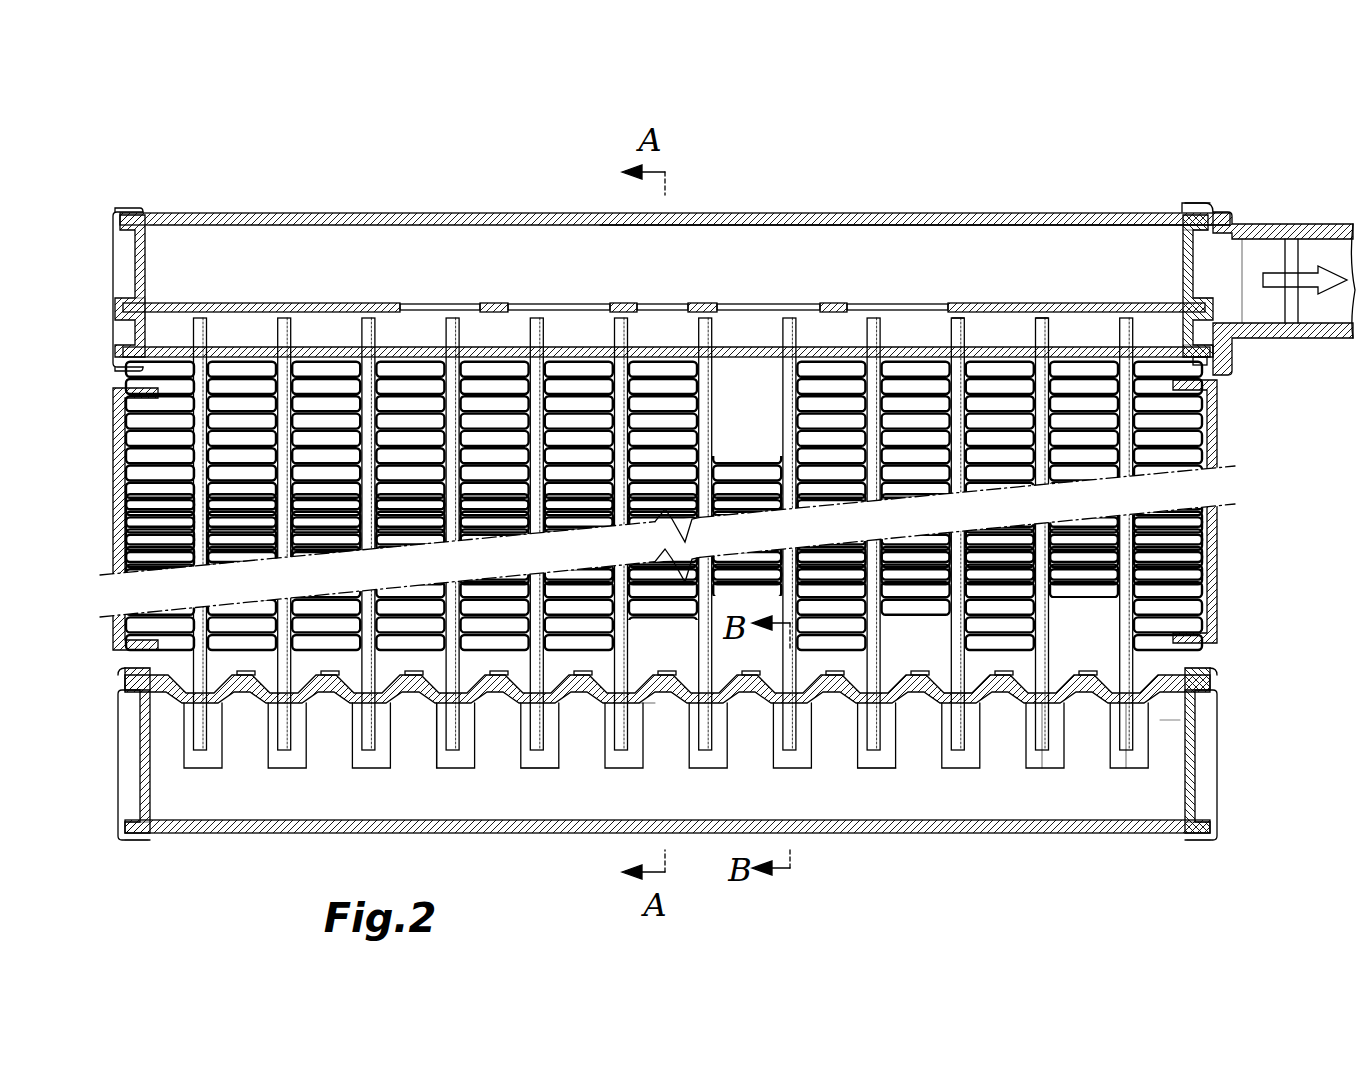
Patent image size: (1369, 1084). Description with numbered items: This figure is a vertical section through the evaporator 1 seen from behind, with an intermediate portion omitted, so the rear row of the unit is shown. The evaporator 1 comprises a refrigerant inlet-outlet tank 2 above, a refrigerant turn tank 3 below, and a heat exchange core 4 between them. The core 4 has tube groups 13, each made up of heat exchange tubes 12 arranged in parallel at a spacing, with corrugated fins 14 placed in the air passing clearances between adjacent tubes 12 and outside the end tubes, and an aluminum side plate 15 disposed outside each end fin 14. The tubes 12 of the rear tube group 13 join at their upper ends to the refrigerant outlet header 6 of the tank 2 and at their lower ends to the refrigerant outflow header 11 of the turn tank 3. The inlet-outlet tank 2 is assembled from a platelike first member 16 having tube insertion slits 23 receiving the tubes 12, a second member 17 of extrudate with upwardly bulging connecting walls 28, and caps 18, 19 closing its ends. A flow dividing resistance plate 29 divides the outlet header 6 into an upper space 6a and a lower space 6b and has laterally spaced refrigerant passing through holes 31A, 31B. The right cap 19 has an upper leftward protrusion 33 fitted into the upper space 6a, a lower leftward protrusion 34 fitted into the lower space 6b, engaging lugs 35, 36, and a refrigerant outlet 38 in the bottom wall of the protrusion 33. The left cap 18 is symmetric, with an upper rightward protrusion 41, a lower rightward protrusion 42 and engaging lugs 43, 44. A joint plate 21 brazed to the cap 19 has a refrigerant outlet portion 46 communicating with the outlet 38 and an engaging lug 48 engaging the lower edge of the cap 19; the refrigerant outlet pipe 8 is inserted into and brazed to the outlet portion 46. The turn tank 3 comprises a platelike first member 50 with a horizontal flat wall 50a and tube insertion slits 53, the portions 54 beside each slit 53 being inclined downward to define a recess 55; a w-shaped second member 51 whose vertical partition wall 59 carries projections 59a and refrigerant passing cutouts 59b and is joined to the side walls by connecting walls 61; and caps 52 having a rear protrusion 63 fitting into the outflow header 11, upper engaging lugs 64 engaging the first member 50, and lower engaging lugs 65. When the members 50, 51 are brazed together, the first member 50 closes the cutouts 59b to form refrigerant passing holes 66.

The evaporator 1 is at (1013, 163).
The refrigerant inlet-outlet tank 2 is at (760, 213).
The refrigerant turn tank 3 is at (270, 842).
The heat exchange core 4 is at (1215, 560).
The refrigerant outlet header 6 is at (385, 288).
The upper space 6a is at (225, 213).
The lower space 6b is at (330, 303).
The refrigerant outlet pipe 8 is at (1325, 338).
The refrigerant outflow header 11 is at (318, 808).
The heat exchange tubes 12 is at (795, 750).
The tube group 13 is at (1150, 720).
The corrugated fins 14 is at (1180, 515).
The side plate 15 is at (113, 470).
The first member 16 is at (745, 357).
The second member 17 is at (930, 213).
The left cap 18 is at (113, 230).
The right cap 19 is at (1185, 212).
The joint plate 21 is at (1228, 212).
The tube insertion holes 23 is at (1040, 322).
The connecting walls 28 is at (520, 213).
The flow dividing resistance plate 29 is at (290, 303).
The refrigerant passing through hole 31A is at (700, 303).
The refrigerant passing through hole 31B is at (490, 303).
The upper leftward protrusion 33 is at (1180, 230).
The lower leftward protrusion 34 is at (1200, 312).
The engaging lug 35 is at (1205, 203).
The engaging lug 36 is at (1193, 358).
The refrigerant outlet 38 is at (1183, 236).
The upper rightward protrusion 41 is at (145, 230).
The lower rightward protrusion 42 is at (140, 300).
The upper engaging lug 43 is at (130, 208).
The lower engaging lug 44 is at (115, 362).
The refrigerant outlet portion 46 is at (1270, 338).
The engaging lug 48 is at (1200, 366).
The first member 50 is at (1085, 675).
The horizontal flat wall 50a is at (130, 675).
The second member 51 is at (955, 898).
The caps 52 is at (118, 800).
The tube insertion holes 53 is at (1048, 720).
The inclined portions 54 is at (645, 671).
The recess 55 is at (645, 703).
The vertical partition wall 59 is at (495, 770).
The projections 59a is at (950, 680).
The refrigerant passing cutouts 59b is at (437, 770).
The connecting walls 61 is at (875, 770).
The laterally inward protrusion 63 is at (150, 830).
The engaging lugs 64 is at (130, 676).
The engaging lug 65 is at (140, 842).
The refrigerant passing holes 66 is at (540, 770).